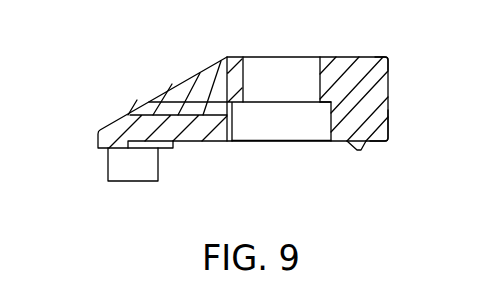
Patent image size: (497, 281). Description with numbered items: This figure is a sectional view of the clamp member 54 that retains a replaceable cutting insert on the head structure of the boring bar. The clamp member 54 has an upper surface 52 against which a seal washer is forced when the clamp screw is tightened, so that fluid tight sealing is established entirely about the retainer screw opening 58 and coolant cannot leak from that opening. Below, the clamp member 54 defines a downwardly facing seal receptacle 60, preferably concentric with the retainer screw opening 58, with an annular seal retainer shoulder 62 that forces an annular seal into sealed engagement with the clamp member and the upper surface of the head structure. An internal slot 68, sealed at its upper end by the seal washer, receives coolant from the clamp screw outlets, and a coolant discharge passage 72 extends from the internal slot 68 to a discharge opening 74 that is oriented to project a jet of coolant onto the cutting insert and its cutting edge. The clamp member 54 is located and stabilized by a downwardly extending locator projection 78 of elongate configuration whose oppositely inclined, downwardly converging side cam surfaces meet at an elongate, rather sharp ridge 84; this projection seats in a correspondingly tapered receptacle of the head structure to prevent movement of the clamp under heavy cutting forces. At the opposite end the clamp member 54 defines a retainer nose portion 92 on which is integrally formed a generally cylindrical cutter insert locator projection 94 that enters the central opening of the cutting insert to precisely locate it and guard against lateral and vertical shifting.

The upper surface 52 is at (328, 60).
The clamp member 54 is at (392, 70).
The retainer screw opening 58 is at (280, 60).
The downwardly facing seal receptacle 60 is at (303, 132).
The annular seal retainer shoulder 62 is at (332, 103).
The internal slot 68 is at (234, 122).
The coolant discharge passage 72 is at (187, 110).
The discharge opening 74 is at (133, 113).
The downwardly extending locator projection 78 is at (368, 141).
The ridge 84 is at (371, 150).
The retainer nose portion 92 is at (110, 135).
The cutter insert locator projection 94 is at (117, 169).